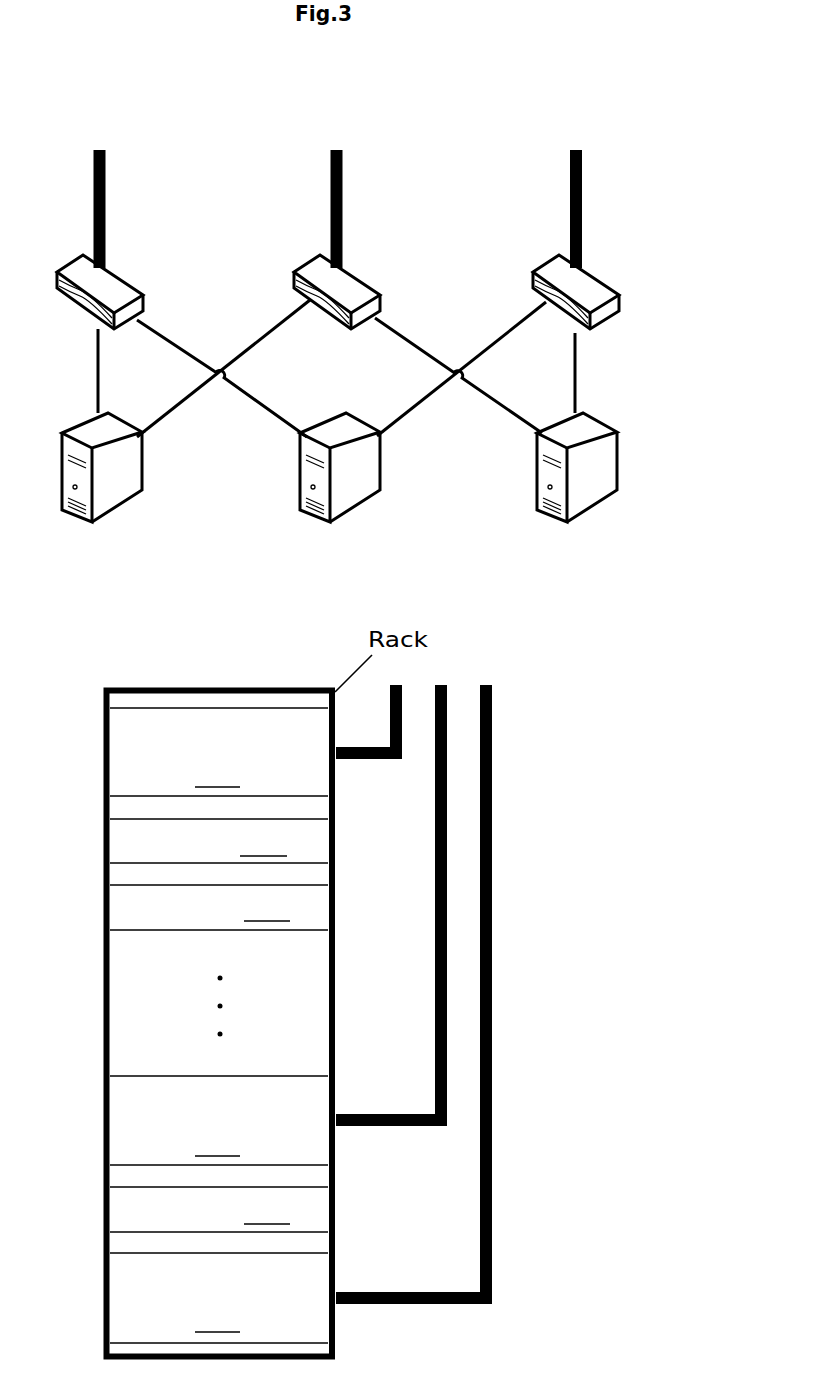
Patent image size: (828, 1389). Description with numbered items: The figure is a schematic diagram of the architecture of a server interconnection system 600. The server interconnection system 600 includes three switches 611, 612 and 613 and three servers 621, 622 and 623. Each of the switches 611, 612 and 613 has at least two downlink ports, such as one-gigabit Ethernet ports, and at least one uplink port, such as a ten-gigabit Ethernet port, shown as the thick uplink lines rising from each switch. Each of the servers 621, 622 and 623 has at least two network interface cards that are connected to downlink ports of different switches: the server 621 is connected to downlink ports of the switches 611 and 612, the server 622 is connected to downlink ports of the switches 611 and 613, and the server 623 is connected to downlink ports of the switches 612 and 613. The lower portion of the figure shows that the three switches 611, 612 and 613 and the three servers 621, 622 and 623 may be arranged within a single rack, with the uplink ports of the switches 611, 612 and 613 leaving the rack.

The server interconnection system 600 is at (138, 111).
The switch 611 is at (192, 294).
The switch 612 is at (442, 296).
The switch 613 is at (680, 294).
The server 621 is at (205, 506).
The server 622 is at (445, 506).
The server 623 is at (680, 506).